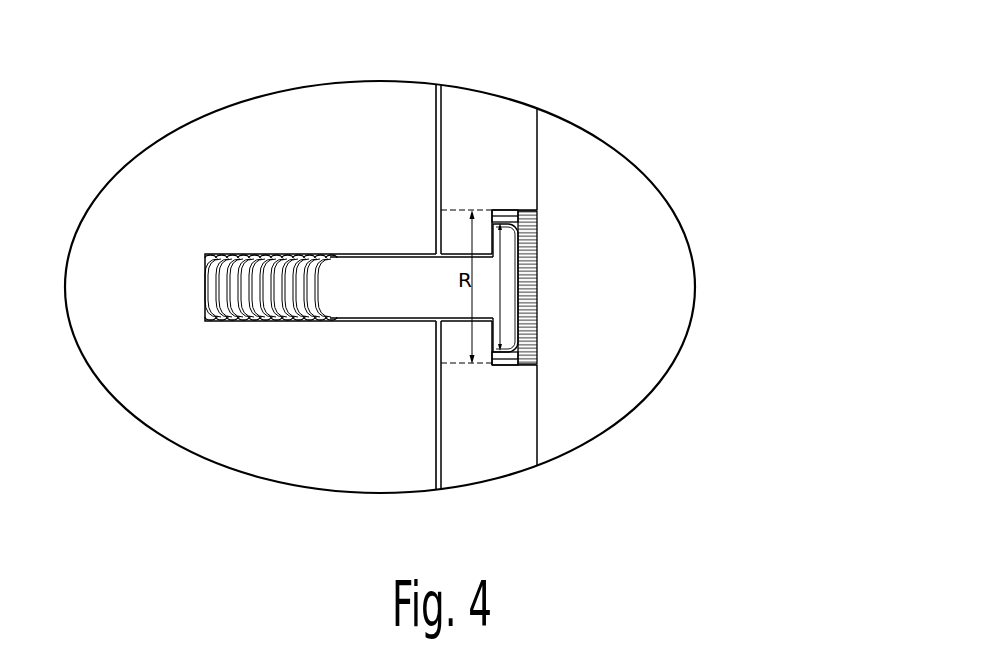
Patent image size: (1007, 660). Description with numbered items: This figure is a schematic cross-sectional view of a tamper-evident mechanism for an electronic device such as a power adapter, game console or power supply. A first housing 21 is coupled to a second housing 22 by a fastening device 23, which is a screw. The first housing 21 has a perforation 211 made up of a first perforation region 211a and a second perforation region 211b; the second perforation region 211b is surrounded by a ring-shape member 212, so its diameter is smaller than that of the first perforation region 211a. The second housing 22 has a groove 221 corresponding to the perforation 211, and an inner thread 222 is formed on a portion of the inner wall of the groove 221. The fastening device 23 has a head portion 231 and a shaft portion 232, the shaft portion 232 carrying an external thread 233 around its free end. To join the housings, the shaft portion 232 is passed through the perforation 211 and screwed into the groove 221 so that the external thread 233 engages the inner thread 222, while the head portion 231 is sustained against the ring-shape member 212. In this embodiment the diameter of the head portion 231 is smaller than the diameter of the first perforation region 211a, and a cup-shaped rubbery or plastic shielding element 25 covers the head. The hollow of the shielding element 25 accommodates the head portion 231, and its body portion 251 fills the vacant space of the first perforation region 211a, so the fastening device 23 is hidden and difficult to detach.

The first housing 21 is at (615, 254).
The perforation 211 is at (641, 230).
The first perforation region 211a is at (528, 208).
The second perforation region 211b is at (537, 147).
The ring-shape member 212 is at (448, 235).
The second housing 22 is at (242, 268).
The groove 221 is at (405, 252).
The inner thread 222 is at (260, 255).
The fastening device 23 is at (533, 322).
The head portion 231 is at (527, 272).
The shaft portion 232 is at (442, 287).
The external thread 233 is at (300, 283).
The shielding element 25 is at (625, 257).
The body portion 251 is at (507, 207).